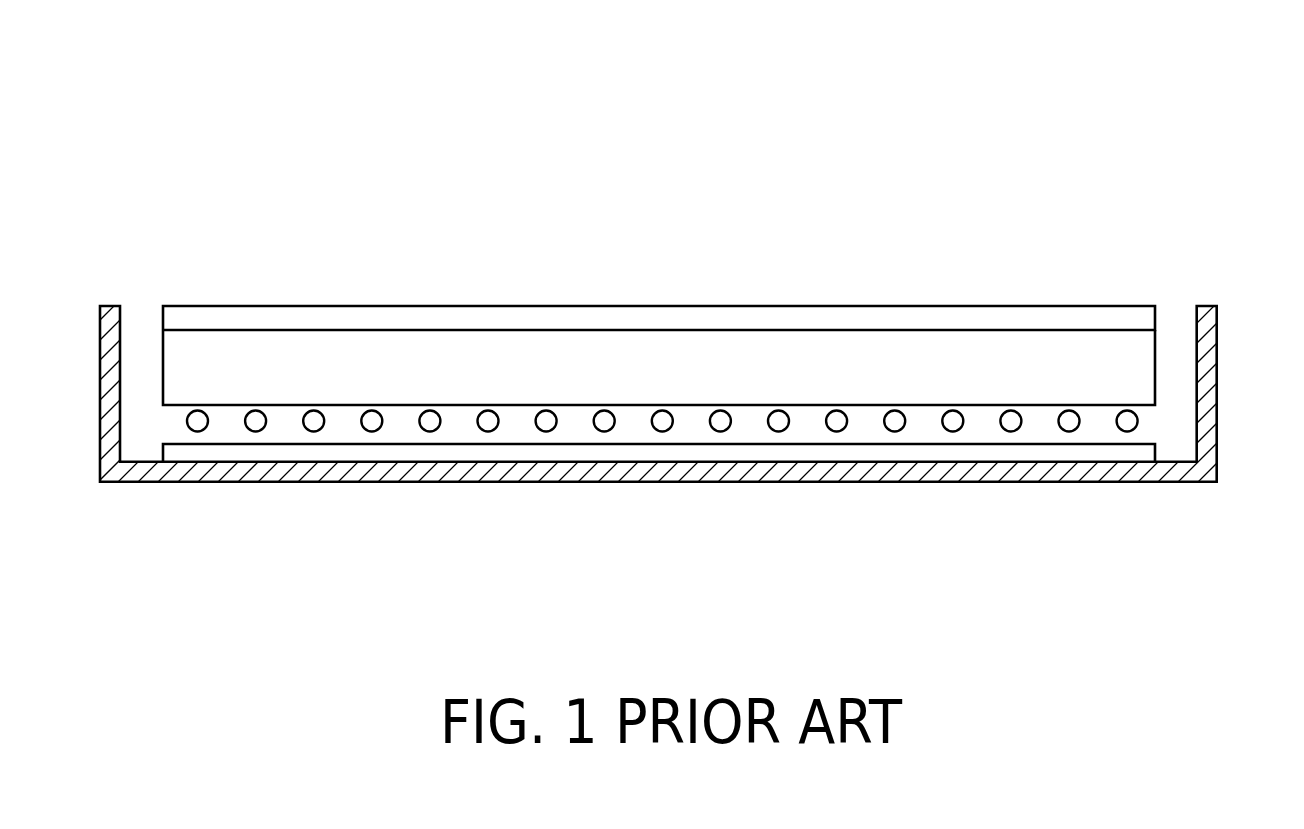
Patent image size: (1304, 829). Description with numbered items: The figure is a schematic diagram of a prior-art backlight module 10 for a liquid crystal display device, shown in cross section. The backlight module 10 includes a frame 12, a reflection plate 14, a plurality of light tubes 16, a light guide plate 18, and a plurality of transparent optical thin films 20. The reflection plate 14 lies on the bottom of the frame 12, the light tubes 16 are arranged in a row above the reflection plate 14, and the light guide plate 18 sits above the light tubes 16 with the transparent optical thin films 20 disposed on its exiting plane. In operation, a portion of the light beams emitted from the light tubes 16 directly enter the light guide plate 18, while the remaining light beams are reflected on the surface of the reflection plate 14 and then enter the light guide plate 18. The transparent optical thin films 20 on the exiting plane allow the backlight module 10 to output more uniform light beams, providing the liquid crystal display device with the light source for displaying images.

The backlight module 10 is at (1114, 162).
The frame 12 is at (850, 472).
The reflection plate 14 is at (528, 450).
The light tube 16 is at (313, 424).
The light guide plate 18 is at (682, 382).
The transparent optical thin film 20 is at (1067, 318).